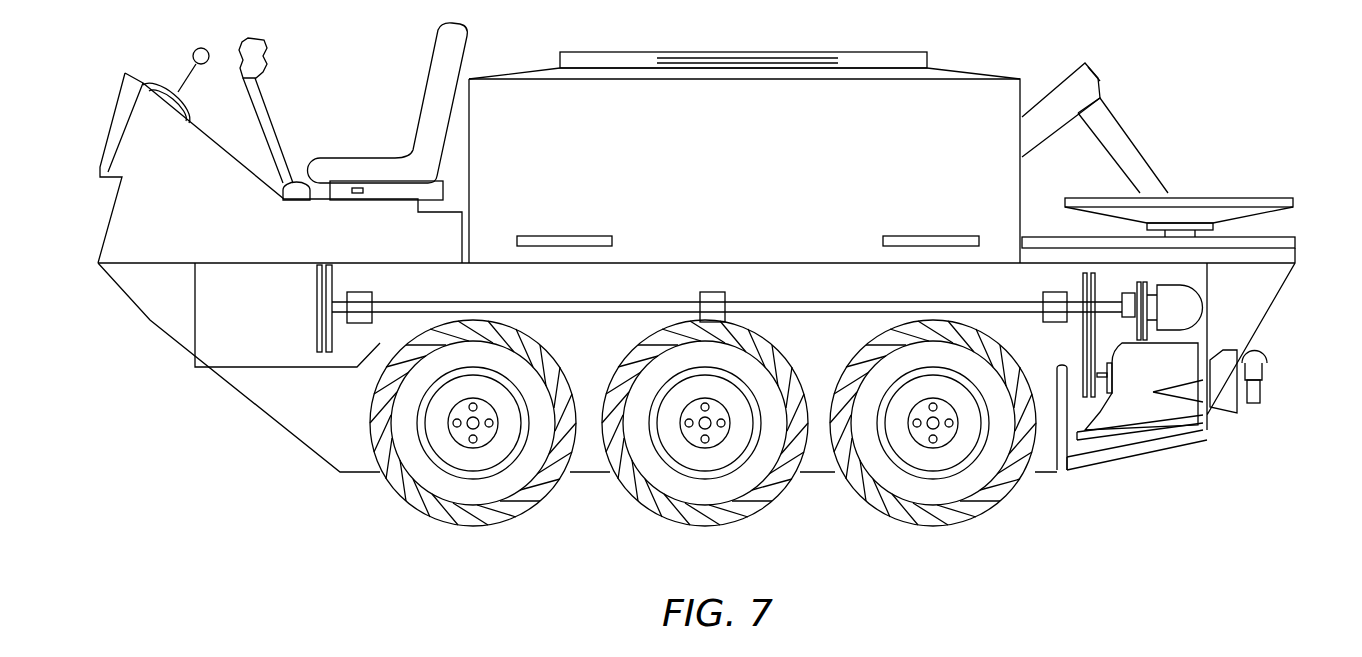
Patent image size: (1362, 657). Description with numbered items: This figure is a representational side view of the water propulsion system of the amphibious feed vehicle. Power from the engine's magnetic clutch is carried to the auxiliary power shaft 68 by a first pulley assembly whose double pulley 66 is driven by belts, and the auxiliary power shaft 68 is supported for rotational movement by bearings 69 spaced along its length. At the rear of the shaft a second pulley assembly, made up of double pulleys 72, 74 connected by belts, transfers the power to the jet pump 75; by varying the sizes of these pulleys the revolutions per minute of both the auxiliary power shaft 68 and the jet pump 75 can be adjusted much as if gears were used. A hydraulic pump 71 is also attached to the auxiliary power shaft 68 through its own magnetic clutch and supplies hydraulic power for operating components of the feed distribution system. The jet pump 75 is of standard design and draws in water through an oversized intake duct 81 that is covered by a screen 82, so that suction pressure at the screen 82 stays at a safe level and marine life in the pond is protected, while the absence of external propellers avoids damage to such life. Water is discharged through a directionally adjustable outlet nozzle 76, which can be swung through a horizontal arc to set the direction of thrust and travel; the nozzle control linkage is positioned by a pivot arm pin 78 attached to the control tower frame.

The double pulley 66 is at (314, 302).
The auxiliary power shaft 68 is at (805, 300).
The bearings 69 is at (350, 328).
The hydraulic pump 71 is at (1207, 306).
The double pulley 72 is at (1092, 272).
The double pulley 74 is at (1077, 403).
The jet pump 75 is at (1182, 365).
The outlet nozzle 76 is at (1268, 383).
The pivot arm pin 78 is at (1112, 346).
The intake duct 81 is at (1160, 281).
The screen 82 is at (1122, 444).